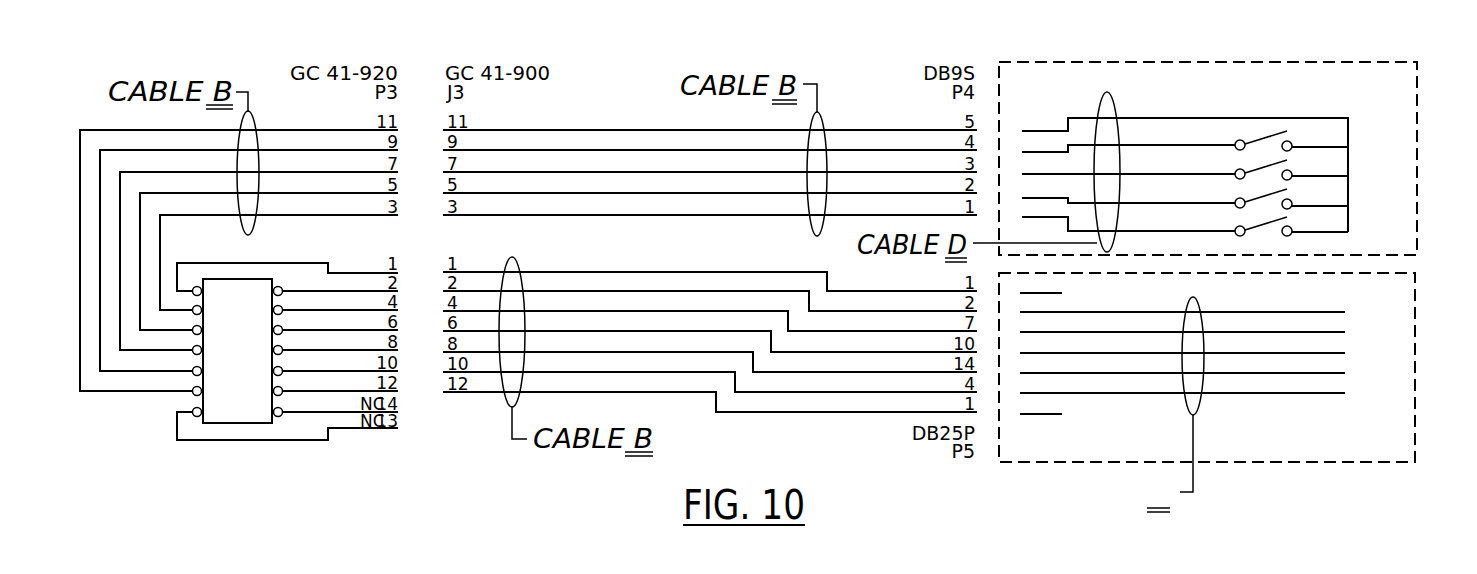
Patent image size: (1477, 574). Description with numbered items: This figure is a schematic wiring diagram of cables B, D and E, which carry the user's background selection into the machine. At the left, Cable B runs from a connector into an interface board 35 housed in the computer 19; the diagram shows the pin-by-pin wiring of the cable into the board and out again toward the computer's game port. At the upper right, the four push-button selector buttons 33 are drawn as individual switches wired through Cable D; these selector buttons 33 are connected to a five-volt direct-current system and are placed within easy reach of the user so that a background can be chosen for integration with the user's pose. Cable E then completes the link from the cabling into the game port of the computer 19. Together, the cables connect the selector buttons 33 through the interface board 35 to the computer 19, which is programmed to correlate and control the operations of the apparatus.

The selector buttons 33 is at (1350, 208).
The interface board 35 is at (192, 412).
The computer 19 is at (1370, 366).